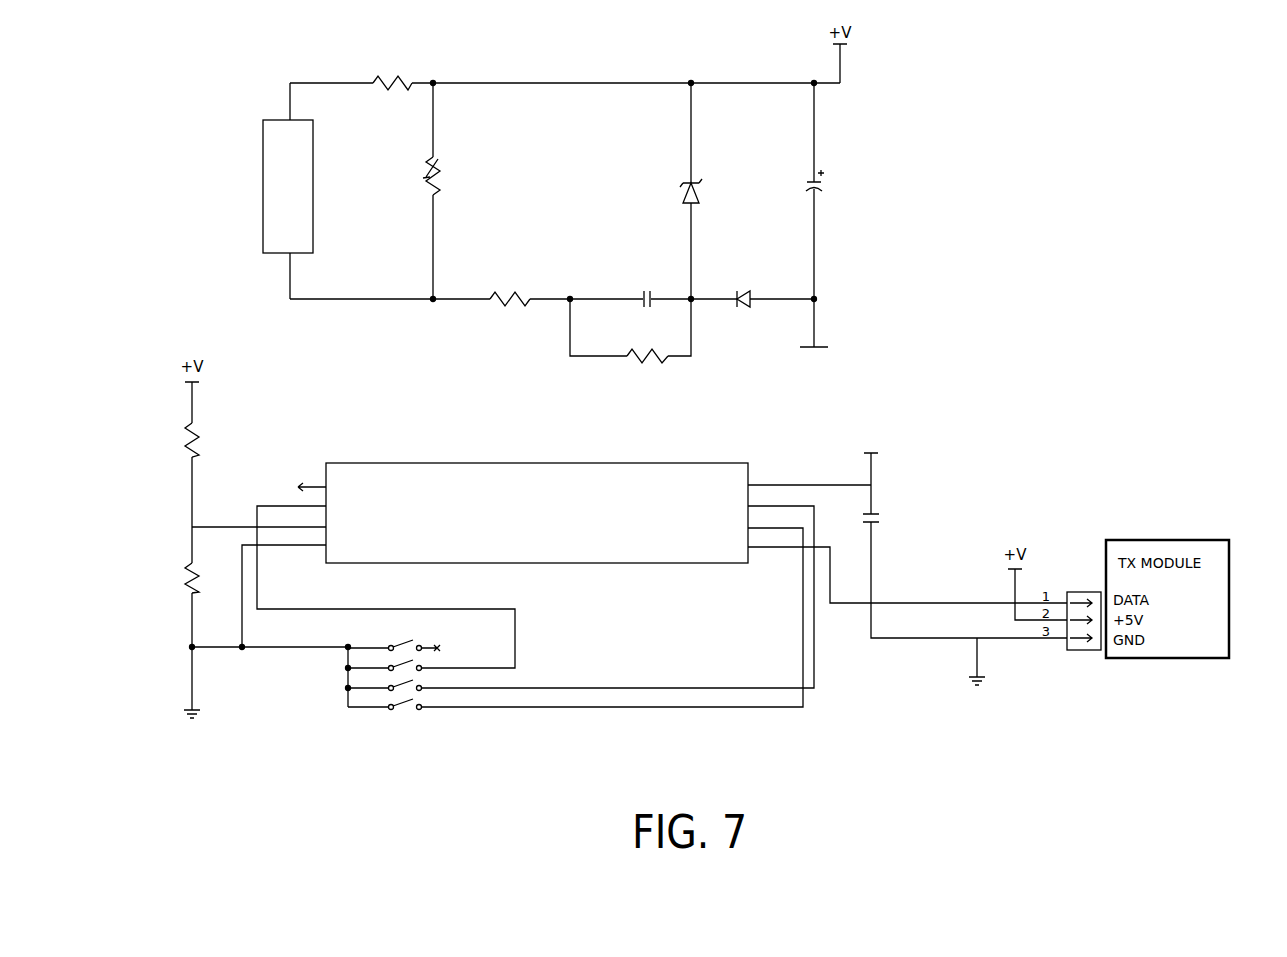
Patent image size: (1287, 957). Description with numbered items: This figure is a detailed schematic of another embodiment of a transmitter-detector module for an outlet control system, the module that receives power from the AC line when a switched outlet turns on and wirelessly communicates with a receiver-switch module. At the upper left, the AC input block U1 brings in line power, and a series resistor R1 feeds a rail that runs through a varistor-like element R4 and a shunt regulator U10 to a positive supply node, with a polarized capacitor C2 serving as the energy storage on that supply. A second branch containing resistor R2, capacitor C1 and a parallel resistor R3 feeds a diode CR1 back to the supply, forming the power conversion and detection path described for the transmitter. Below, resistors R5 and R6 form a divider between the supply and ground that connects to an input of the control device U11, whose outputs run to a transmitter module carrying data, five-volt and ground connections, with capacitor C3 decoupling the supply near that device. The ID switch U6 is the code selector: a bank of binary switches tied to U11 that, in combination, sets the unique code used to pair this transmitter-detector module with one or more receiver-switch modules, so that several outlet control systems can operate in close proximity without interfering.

The AC input module U1 is at (274, 186).
The resistor R1 is at (380, 77).
The resistor R2 is at (497, 292).
The resistor R3 is at (630, 331).
The varistor R4 is at (425, 191).
The resistor R5 is at (184, 448).
The resistor R6 is at (184, 589).
The capacitor C1 is at (647, 289).
The electrolytic capacitor C2 is at (822, 215).
The capacitor C3 is at (954, 558).
The zener diode U10 is at (682, 191).
The diode CR1 is at (762, 310).
The integrated circuit U11 is at (629, 572).
The ID switch U6 is at (400, 695).